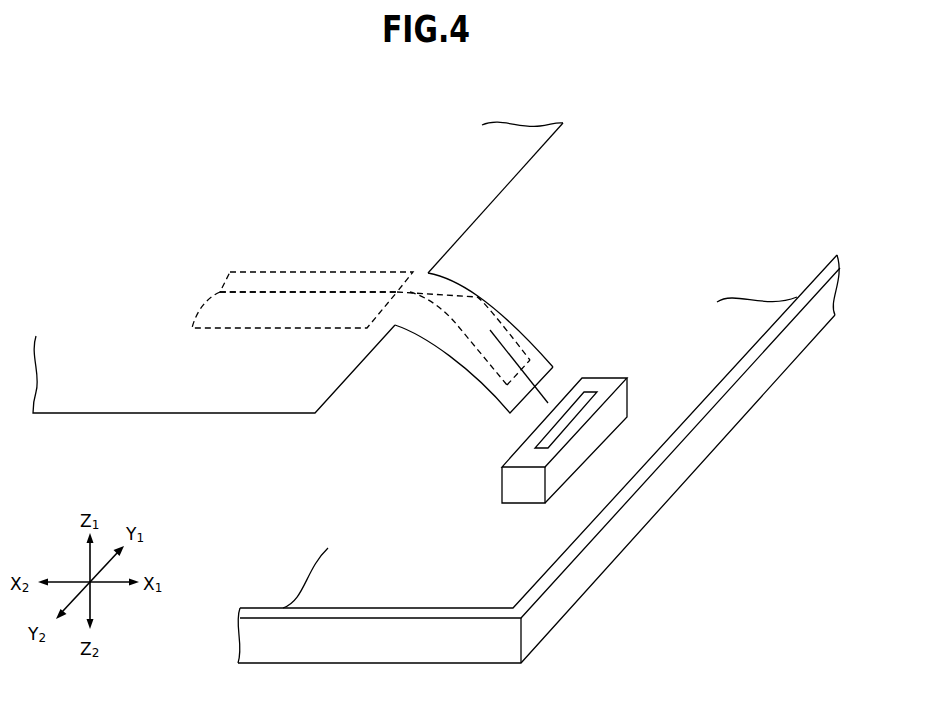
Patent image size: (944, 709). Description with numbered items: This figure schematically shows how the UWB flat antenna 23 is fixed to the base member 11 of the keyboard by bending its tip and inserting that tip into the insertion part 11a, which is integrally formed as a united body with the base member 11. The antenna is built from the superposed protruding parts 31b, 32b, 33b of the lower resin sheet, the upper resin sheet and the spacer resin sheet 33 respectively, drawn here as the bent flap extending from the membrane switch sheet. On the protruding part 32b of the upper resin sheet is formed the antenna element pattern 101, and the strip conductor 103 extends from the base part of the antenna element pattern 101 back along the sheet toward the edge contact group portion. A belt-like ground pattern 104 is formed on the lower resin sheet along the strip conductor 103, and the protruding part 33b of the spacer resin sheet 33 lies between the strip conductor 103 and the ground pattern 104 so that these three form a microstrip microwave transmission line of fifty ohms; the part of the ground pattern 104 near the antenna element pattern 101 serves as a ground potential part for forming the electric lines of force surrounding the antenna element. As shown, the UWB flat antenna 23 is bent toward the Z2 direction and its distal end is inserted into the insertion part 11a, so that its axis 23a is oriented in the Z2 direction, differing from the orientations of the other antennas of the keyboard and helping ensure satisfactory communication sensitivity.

The base member 11 is at (735, 457).
The insertion part 11a is at (503, 458).
The UWB flat antenna 23 is at (514, 319).
The axis 23a is at (540, 390).
The spacer resin sheet 33 is at (338, 280).
The protruding part 32b is at (460, 356).
The protruding part 33b is at (474, 343).
The protruding part 31b is at (460, 355).
The antenna element pattern 101 is at (503, 345).
The strip conductor 103 is at (270, 292).
The ground pattern 104 is at (330, 271).